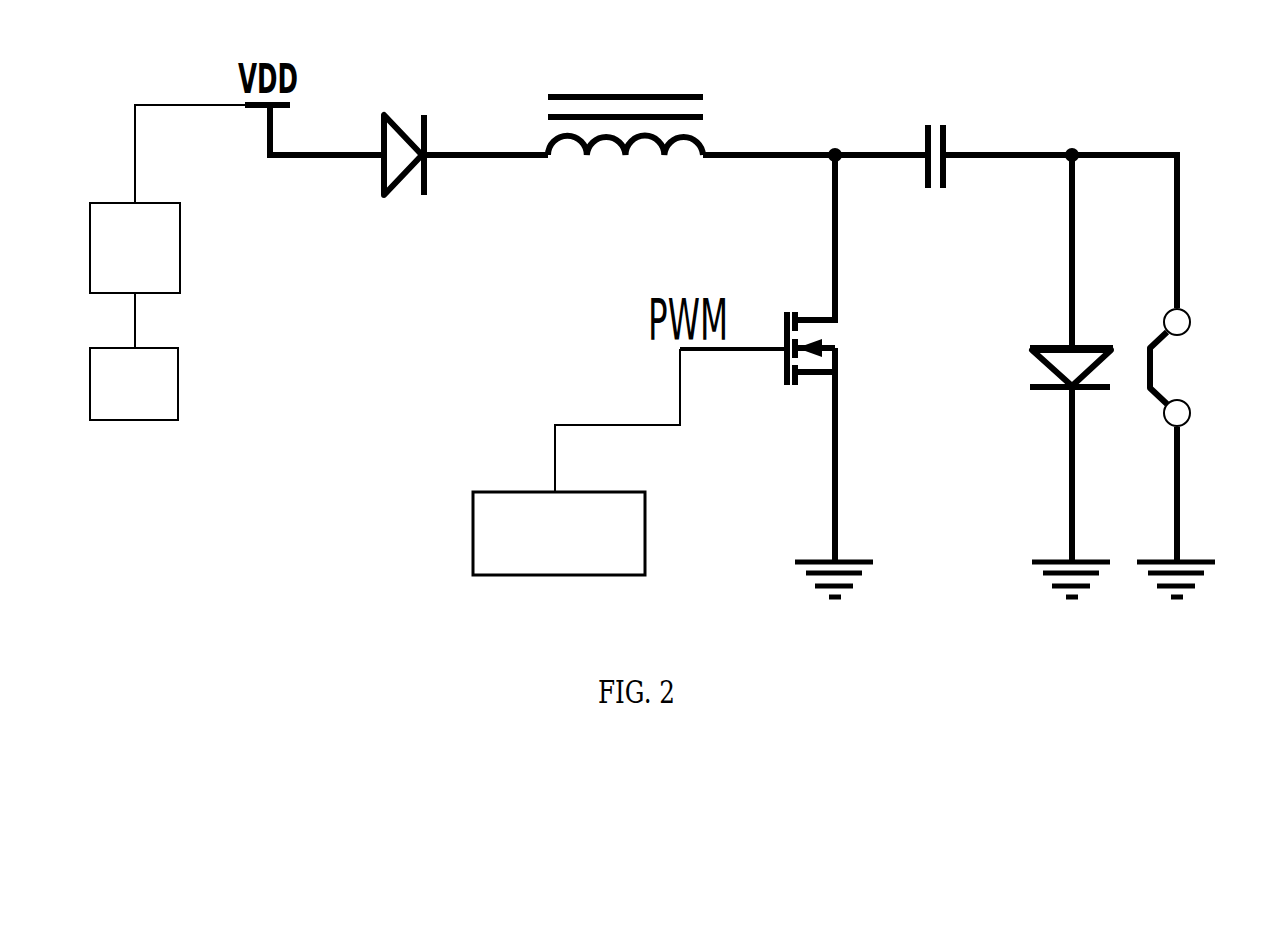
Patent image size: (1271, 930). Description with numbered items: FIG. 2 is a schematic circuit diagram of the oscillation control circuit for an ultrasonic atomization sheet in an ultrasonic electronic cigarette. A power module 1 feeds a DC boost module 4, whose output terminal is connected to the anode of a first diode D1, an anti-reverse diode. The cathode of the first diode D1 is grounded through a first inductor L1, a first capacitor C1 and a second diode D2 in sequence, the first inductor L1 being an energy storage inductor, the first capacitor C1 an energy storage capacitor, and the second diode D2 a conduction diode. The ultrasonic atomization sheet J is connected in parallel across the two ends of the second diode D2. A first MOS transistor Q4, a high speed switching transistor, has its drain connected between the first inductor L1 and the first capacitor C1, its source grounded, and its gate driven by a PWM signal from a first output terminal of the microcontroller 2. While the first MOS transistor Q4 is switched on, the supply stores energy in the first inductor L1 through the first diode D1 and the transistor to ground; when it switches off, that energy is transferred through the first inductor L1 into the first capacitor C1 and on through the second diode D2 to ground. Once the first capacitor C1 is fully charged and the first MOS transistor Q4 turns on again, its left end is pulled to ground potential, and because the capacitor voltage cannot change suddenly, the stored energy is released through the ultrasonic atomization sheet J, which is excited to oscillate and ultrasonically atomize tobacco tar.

The power module 1 is at (134, 384).
The microcontroller 2 is at (559, 533).
The DC boost module 4 is at (135, 248).
The first diode D1 is at (404, 120).
The first inductor L1 is at (625, 92).
The first capacitor C1 is at (937, 126).
The first MOS transistor Q4 is at (847, 357).
The second diode D2 is at (1039, 357).
The ultrasonic atomization sheet J is at (1178, 357).